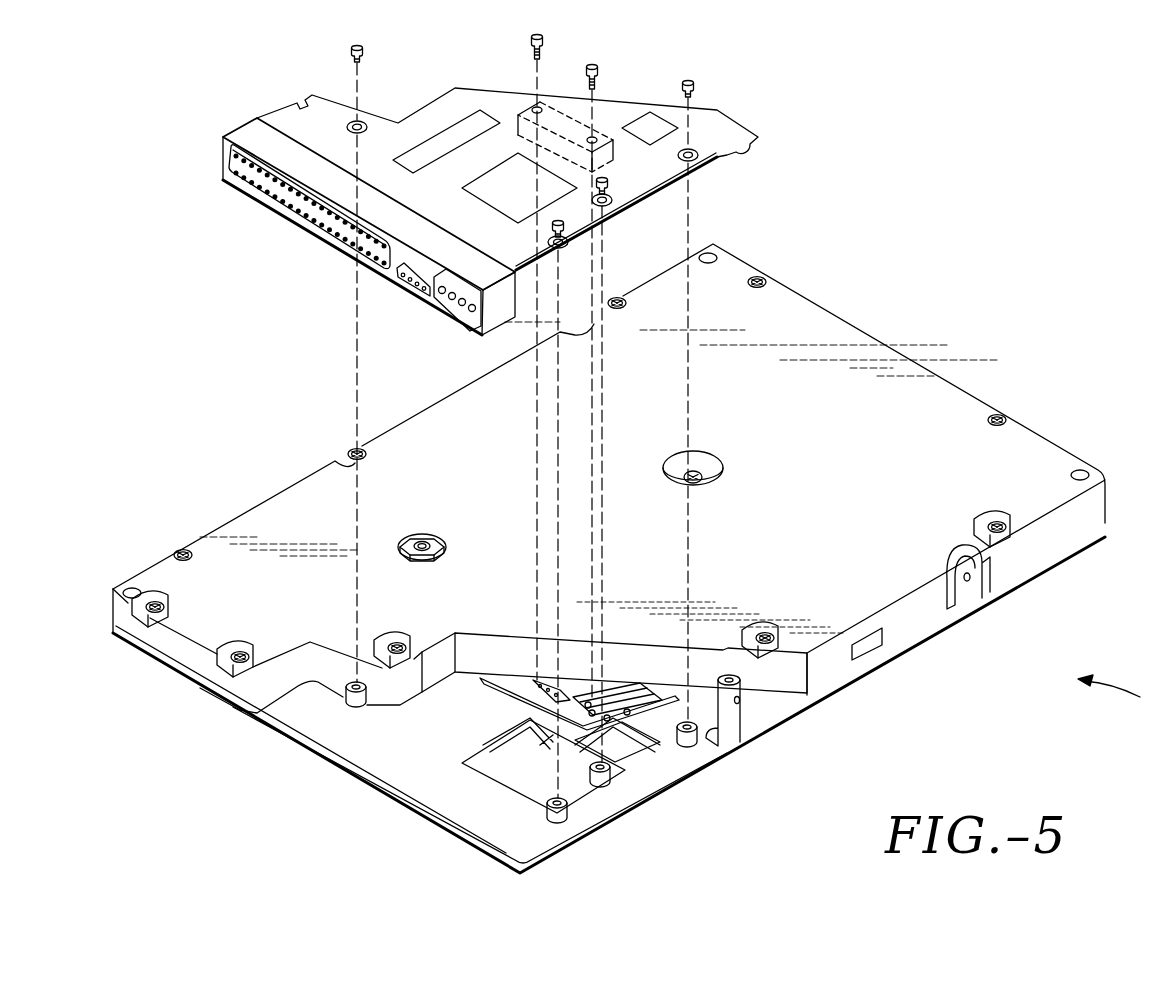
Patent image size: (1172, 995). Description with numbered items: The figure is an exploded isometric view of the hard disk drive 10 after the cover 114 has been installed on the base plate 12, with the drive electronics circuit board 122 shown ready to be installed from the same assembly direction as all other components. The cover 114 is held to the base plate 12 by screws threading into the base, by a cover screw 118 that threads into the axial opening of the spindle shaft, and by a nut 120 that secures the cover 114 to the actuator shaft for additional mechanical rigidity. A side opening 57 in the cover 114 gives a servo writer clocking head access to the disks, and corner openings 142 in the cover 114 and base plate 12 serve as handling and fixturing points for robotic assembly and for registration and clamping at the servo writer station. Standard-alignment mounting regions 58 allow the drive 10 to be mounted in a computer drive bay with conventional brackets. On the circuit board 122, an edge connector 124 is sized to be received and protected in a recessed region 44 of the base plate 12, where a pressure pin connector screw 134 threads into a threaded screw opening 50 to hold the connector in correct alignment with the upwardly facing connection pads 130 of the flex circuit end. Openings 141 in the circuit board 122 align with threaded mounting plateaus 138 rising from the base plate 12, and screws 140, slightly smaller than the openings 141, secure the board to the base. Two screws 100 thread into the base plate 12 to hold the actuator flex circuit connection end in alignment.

The hard disk drive 10 is at (1121, 690).
The base plate 12 is at (800, 712).
The recessed region 44 is at (410, 783).
The threaded screw opening 50 is at (540, 680).
The side opening 57 is at (864, 648).
The standard-alignment mounting regions 58 is at (345, 455).
The screws 100 is at (528, 708).
The cover 114 is at (891, 360).
The cover screw 118 is at (700, 470).
The nut 120 is at (420, 540).
The drive electronics circuit board 122 is at (425, 121).
The edge connector 124 is at (247, 133).
The connection pads 130 is at (510, 690).
The pressure pin connector screw 134 is at (531, 50).
The threaded mounting plateaus 138 is at (692, 748).
The screws 140 is at (350, 48).
The openings 141 is at (362, 122).
The corner openings 142 is at (710, 255).